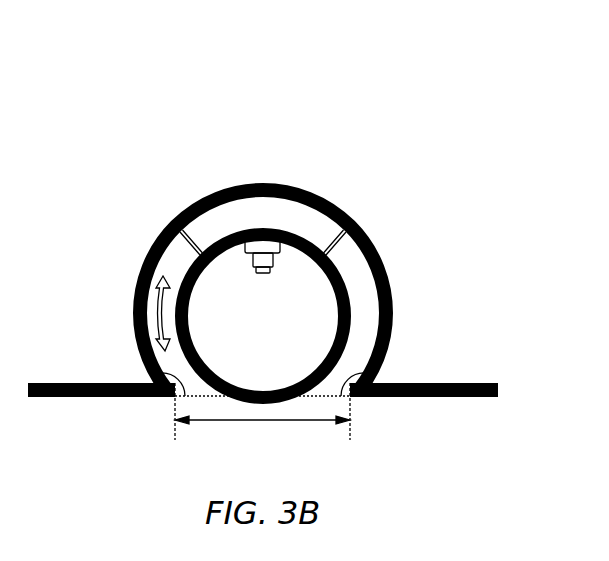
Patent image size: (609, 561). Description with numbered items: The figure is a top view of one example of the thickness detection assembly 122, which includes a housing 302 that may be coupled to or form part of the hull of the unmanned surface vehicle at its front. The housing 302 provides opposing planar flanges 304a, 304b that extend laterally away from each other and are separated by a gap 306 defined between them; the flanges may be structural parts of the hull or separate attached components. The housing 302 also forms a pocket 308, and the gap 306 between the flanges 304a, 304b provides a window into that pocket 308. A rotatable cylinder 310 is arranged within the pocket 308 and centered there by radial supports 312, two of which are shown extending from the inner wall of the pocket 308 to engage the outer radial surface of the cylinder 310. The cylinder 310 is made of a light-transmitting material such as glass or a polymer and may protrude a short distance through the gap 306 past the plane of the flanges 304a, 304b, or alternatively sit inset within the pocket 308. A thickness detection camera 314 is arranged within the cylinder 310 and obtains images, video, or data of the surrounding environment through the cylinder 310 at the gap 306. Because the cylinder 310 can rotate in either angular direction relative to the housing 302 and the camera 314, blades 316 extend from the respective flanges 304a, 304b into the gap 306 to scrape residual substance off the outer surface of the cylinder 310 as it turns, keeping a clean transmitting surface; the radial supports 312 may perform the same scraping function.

The thickness detection assembly 122 is at (422, 171).
The housing 302 is at (249, 395).
The planar flange 304a is at (102, 397).
The planar flange 304b is at (433, 397).
The gap 306 is at (227, 422).
The pocket 308 is at (318, 210).
The rotatable cylinder 310 is at (222, 233).
The radial supports 312 is at (180, 240).
The thickness detection camera 314 is at (264, 230).
The blades 316 is at (148, 376).